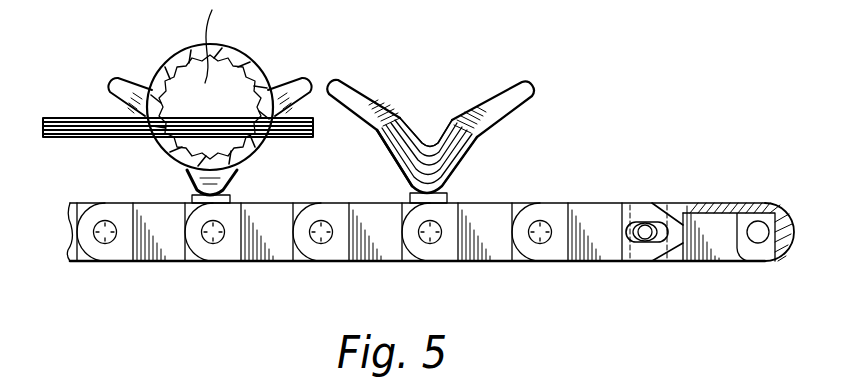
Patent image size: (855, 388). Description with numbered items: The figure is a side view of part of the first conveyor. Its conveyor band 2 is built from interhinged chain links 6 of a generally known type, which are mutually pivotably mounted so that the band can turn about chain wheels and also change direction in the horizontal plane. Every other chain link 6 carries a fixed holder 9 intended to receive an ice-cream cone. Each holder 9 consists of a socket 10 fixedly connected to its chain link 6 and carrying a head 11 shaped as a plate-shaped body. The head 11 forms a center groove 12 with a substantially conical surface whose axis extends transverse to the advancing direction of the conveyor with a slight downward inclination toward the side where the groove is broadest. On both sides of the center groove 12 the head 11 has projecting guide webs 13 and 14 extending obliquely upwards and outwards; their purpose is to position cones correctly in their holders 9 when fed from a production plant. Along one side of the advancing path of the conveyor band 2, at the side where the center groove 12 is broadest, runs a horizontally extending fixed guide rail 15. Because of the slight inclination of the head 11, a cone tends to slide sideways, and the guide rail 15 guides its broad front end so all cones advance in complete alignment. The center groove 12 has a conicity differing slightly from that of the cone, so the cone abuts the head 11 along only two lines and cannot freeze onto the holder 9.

The conveyor band 2 is at (430, 236).
The chain link 6 is at (487, 262).
The holder 9 is at (247, 180).
The socket 10 is at (190, 197).
The head 11 is at (395, 172).
The center groove 12 is at (435, 140).
The guide web 13 is at (505, 100).
The guide web 14 is at (383, 100).
The guide rail 15 is at (83, 137).